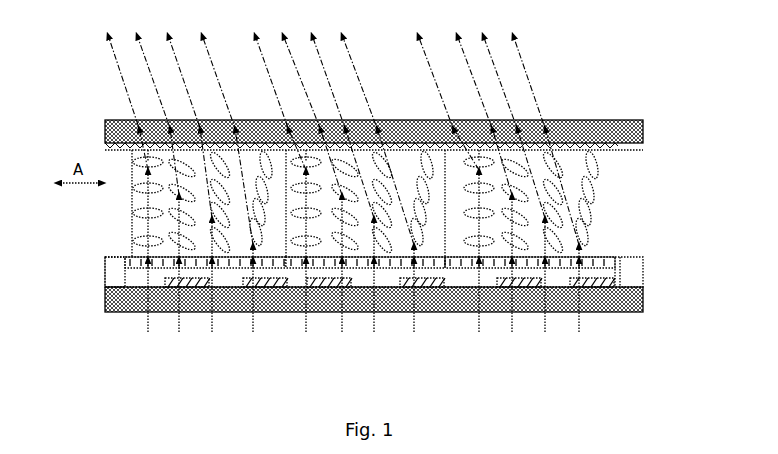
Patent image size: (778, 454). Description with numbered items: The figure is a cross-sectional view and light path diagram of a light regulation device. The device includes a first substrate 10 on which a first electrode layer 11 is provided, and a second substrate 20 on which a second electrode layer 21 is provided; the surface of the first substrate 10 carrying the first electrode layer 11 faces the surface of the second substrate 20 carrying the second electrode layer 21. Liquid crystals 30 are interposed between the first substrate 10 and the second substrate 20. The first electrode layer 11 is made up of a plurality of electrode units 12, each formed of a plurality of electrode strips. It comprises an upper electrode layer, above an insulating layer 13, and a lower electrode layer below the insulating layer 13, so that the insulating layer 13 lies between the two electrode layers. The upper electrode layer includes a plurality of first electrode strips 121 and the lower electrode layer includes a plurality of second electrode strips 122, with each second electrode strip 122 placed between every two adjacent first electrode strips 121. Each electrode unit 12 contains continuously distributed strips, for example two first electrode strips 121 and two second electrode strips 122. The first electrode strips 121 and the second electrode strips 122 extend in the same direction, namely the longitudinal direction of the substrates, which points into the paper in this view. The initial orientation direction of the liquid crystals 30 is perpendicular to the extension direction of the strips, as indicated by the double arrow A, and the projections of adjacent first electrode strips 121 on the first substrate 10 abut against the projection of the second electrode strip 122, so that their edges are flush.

The first substrate 10 is at (643, 310).
The first electrode layer 11 is at (118, 282).
The electrode unit 12 is at (341, 317).
The first electrode strip 121 is at (303, 288).
The second electrode strip 122 is at (195, 288).
The insulating layer 13 is at (643, 272).
The second substrate 20 is at (643, 122).
The second electrode layer 21 is at (643, 147).
The liquid crystals 30 is at (598, 176).